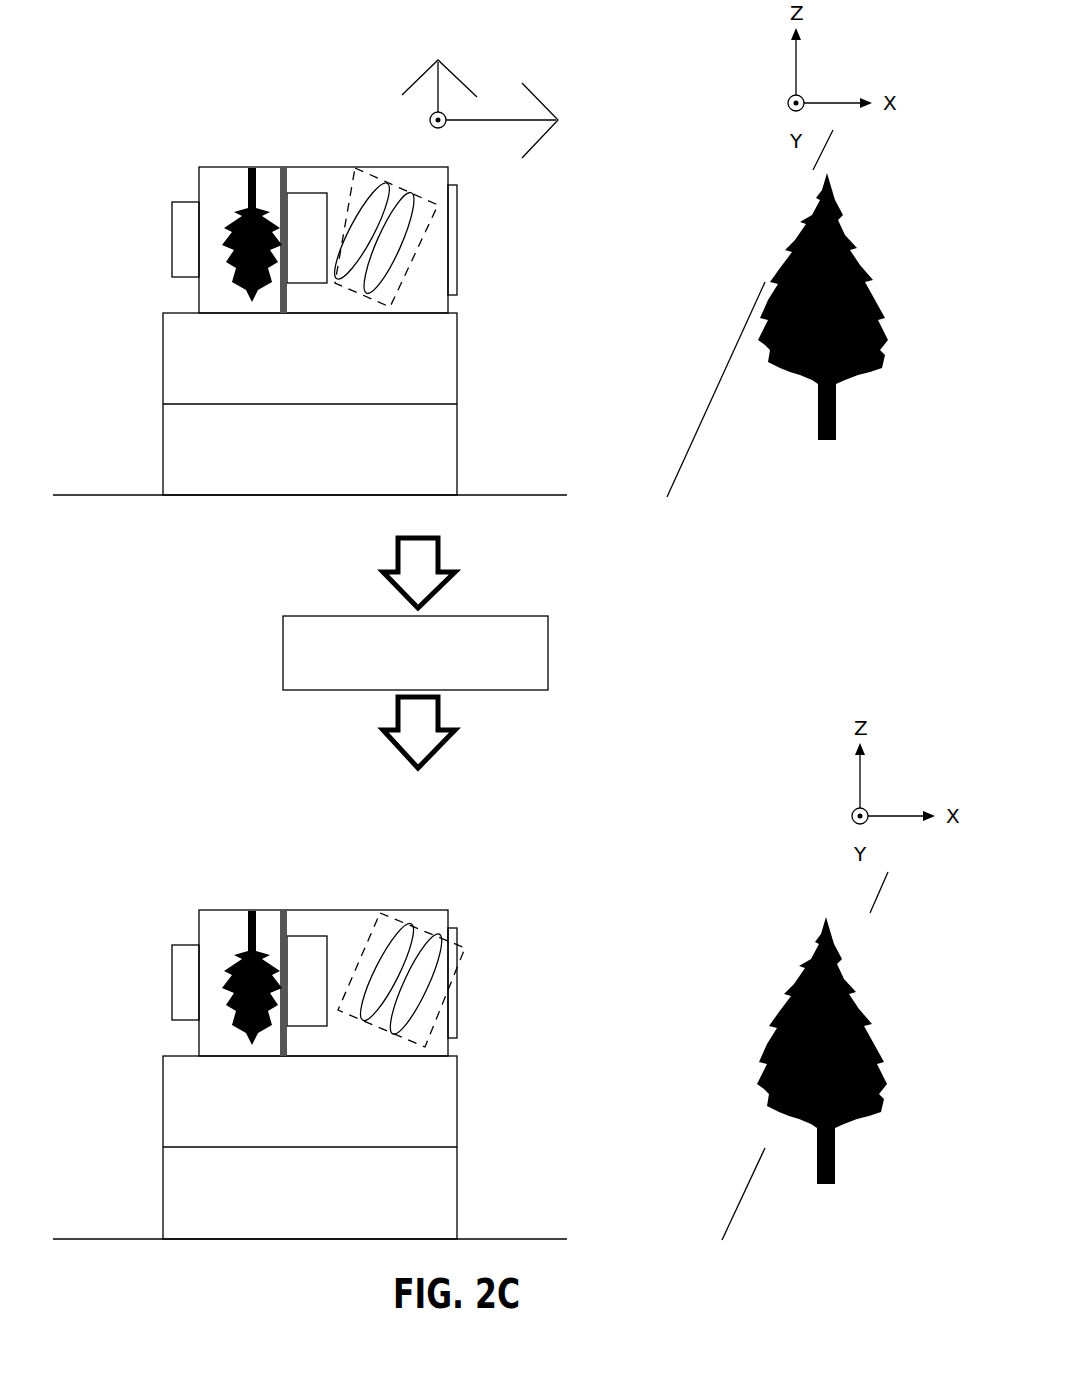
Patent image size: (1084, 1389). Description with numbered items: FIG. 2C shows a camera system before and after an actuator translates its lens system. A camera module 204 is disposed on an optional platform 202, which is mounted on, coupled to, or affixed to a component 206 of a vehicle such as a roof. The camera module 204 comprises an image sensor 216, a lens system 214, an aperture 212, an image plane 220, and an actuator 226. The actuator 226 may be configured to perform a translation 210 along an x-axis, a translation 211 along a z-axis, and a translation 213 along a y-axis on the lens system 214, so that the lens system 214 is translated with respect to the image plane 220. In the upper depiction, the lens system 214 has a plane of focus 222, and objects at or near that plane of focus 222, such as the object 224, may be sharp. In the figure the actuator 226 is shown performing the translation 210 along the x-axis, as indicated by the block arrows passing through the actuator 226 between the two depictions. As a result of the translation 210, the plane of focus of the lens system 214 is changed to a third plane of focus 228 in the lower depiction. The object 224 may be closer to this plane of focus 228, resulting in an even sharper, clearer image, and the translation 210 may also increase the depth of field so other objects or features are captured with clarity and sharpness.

The platform 202 is at (163, 458).
The camera module 204 is at (199, 185).
The component of a vehicle 206 is at (553, 495).
The translation along an x-axis 210 is at (502, 120).
The translation along a z-axis 211 is at (439, 89).
The aperture 212 is at (458, 223).
The translation along a y-axis 213 is at (430, 120).
The lens system 214 is at (368, 180).
The image sensor 216 is at (307, 193).
The image plane 220 is at (268, 167).
The plane of focus 222 is at (728, 358).
The object 224 is at (785, 248).
The actuator 226 is at (172, 248).
The third plane of focus 228 is at (757, 1150).